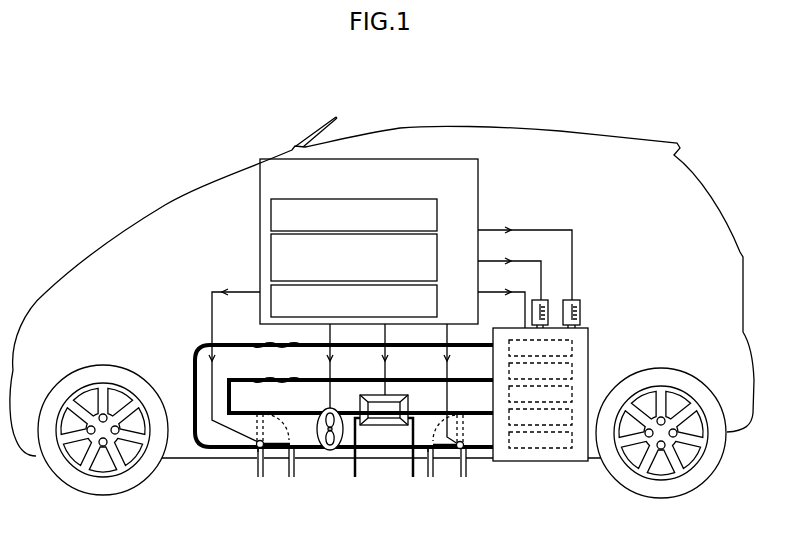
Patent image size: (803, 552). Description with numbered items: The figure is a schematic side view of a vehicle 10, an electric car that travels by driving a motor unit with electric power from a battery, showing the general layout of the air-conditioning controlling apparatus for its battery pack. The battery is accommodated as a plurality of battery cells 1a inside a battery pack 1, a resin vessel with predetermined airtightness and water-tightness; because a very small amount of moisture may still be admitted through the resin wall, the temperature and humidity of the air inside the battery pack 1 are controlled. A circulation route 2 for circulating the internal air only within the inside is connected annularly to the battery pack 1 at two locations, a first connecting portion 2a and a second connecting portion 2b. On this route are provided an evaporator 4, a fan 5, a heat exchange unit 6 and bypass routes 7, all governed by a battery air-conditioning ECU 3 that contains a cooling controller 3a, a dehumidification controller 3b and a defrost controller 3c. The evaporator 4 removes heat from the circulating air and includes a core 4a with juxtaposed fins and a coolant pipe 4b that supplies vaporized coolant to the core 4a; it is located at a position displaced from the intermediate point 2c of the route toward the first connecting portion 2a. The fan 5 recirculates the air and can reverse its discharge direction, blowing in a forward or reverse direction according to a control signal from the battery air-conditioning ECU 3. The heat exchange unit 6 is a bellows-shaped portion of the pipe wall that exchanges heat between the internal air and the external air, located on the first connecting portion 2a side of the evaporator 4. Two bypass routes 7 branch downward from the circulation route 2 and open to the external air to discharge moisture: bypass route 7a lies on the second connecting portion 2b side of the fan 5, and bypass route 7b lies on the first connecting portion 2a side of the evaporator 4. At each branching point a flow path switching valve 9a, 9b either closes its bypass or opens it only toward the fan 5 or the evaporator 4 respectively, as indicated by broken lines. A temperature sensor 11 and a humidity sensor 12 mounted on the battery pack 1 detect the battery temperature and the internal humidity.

The battery pack 1 is at (559, 415).
The battery cells 1a is at (545, 452).
The circulation route 2 is at (330, 396).
The first connecting portion 2a is at (486, 450).
The second connecting portion 2b is at (486, 344).
The intermediate point 2c is at (193, 400).
The battery air-conditioning ECU 3 is at (478, 186).
The cooling controller 3a is at (438, 217).
The dehumidification controller 3b is at (438, 260).
The defrost controller 3c is at (438, 303).
The evaporator 4 is at (375, 429).
The core 4a is at (392, 394).
The coolant pipe 4b is at (355, 477).
The fan 5 is at (330, 452).
The heat exchange unit 6 is at (257, 344).
The bypass route 7 is at (228, 474).
The bypass route 7a is at (260, 477).
The bypass route 7b is at (430, 477).
The flow path switching valve 9a is at (291, 477).
The flow path switching valve 9b is at (463, 477).
The vehicle 10 is at (176, 175).
The temperature sensor 11 is at (541, 299).
The humidity sensor 12 is at (576, 299).